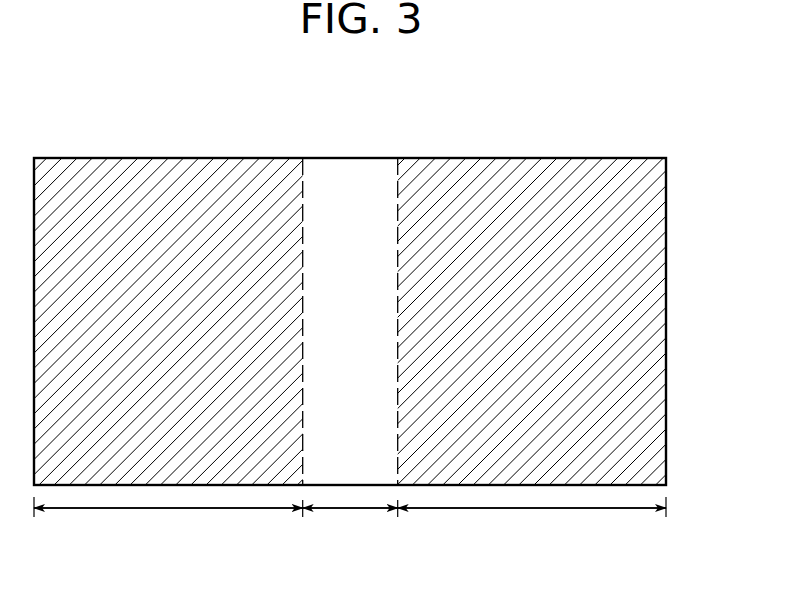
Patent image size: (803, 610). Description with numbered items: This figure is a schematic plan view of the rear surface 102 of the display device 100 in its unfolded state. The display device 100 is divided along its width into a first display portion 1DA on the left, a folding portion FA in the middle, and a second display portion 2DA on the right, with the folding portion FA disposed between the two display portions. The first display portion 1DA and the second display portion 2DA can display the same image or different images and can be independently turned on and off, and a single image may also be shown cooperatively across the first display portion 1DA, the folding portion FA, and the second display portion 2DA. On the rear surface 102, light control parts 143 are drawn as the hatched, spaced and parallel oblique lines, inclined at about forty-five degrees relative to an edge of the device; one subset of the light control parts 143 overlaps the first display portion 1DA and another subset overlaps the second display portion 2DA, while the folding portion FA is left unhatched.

The display device 100 is at (364, 93).
The rear surface 102 is at (401, 297).
The light control parts 143 is at (643, 315).
The first display portion 1DA is at (168, 517).
The folding portion FA is at (350, 519).
The second display portion 2DA is at (532, 517).